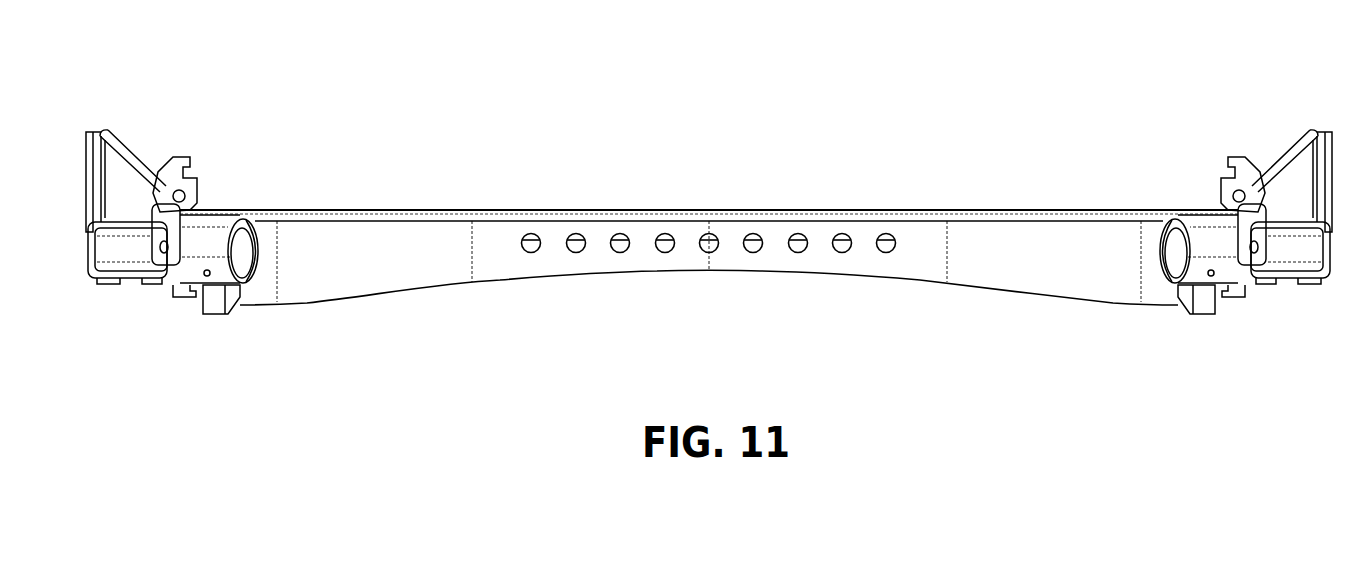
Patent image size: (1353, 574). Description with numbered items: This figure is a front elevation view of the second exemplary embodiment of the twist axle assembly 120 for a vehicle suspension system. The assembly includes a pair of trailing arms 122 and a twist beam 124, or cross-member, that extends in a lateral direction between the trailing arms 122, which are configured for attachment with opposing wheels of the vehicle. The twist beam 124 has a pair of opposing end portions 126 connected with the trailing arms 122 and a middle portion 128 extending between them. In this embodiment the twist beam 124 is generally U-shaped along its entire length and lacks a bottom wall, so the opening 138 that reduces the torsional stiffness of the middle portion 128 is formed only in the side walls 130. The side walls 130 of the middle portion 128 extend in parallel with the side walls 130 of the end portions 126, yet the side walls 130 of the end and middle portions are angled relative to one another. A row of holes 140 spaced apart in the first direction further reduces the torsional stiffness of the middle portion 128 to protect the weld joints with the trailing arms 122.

The twist axle assembly 120 is at (525, 125).
The trailing arm 122 is at (115, 158).
The twist beam 124 is at (775, 185).
The end portion 126 is at (303, 208).
The middle portion 128 is at (696, 210).
The side wall 130 is at (1010, 265).
The opening 138 is at (657, 272).
The holes 140 is at (620, 253).